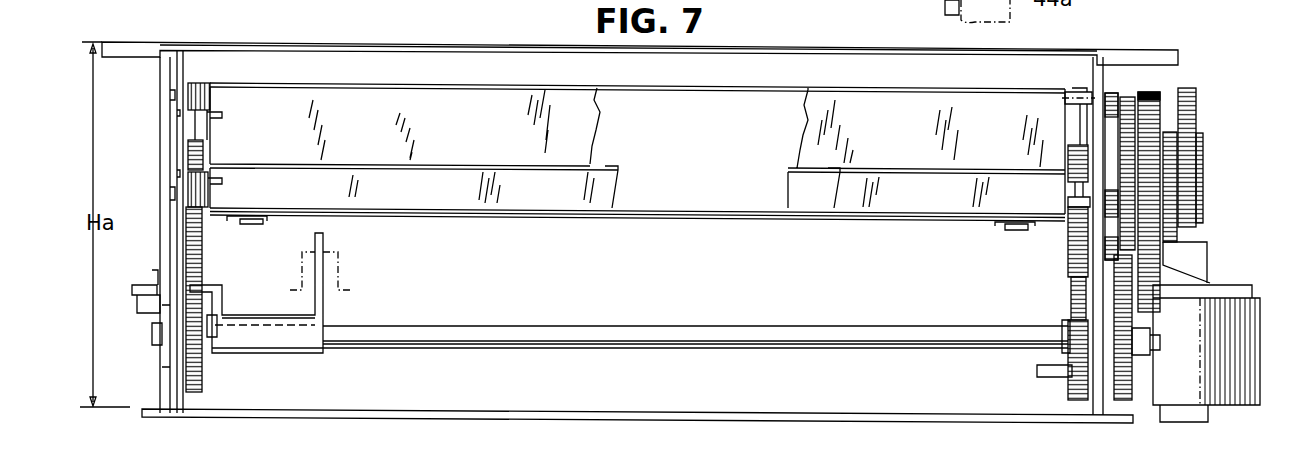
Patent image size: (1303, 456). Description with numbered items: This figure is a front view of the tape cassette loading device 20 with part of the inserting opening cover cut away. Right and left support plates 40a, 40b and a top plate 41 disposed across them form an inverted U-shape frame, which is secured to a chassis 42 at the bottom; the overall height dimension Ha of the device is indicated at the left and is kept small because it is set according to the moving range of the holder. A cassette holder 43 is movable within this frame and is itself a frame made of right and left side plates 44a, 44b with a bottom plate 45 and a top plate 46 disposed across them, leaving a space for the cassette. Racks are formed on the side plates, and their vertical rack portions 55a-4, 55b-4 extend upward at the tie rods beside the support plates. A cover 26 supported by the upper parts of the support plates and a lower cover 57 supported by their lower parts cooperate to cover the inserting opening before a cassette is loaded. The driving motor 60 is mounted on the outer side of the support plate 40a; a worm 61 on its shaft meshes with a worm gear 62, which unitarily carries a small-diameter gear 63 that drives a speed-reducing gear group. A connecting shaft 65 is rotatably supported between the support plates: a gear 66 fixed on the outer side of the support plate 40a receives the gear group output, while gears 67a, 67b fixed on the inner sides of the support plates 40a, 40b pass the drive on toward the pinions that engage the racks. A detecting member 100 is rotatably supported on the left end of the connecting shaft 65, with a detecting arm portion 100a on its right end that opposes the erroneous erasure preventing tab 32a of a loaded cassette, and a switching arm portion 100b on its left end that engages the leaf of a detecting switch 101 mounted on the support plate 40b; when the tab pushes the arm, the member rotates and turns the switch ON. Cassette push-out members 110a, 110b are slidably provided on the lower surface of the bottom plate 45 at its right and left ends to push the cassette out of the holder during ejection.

The tape cassette loading device 20 is at (812, 33).
The cover 26 is at (593, 120).
The erroneous erasure preventing tab 32a is at (352, 265).
The right support plate 40a is at (1092, 402).
The left support plate 40b is at (180, 395).
The top plate 41 is at (848, 45).
The chassis 42 is at (788, 426).
The cassette holder 43 is at (754, 86).
The right side plate 44a is at (1083, 88).
The left side plate 44b is at (200, 82).
The bottom plate 45 is at (690, 224).
The top plate 46 is at (1163, 91).
The vertical rack portion 55a-4 is at (1068, 232).
The vertical rack portion 55b-4 is at (200, 131).
The lower cover 57 is at (577, 220).
The driving motor 60 is at (1212, 408).
The worm 61 is at (1202, 178).
The worm gear 62 is at (1193, 134).
The small-diameter gear 63 is at (1175, 130).
The connecting shaft 65 is at (846, 352).
The gear 66 is at (1133, 370).
The gear 67a is at (1069, 390).
The gear 67b is at (205, 372).
The detecting member 100 is at (325, 308).
The detecting arm portion 100a is at (326, 238).
The switching arm portion 100b is at (140, 284).
The detecting switch 101 is at (150, 330).
The cassette push-out member 110a is at (965, 224).
The cassette push-out member 110b is at (272, 224).